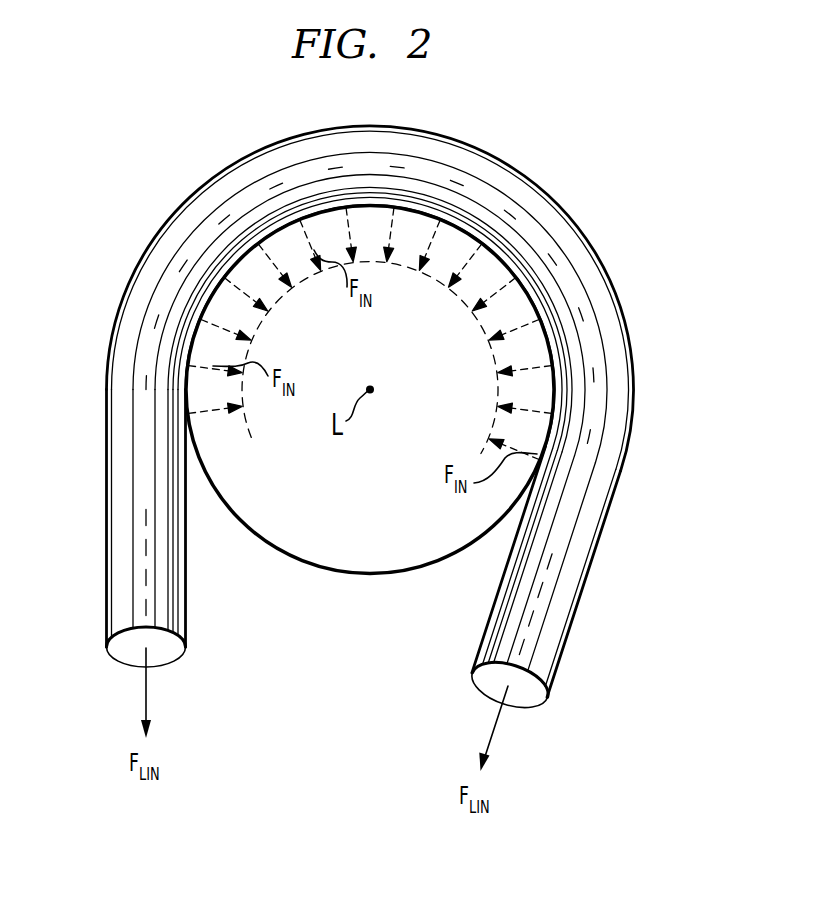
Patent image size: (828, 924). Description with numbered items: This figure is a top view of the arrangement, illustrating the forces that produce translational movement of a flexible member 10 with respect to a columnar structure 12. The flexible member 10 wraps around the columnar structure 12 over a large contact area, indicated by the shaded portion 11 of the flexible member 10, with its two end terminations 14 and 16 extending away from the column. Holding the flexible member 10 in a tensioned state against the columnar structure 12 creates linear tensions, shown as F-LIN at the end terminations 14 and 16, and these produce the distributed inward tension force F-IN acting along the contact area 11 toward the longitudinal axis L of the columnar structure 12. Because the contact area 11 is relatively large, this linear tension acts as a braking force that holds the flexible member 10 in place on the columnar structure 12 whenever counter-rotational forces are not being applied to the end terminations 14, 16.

The flexible member 10 is at (595, 345).
The shaded portion (contact area) 11 is at (530, 295).
The columnar structure 12 is at (360, 545).
The end termination 14 is at (122, 653).
The end termination 16 is at (527, 692).